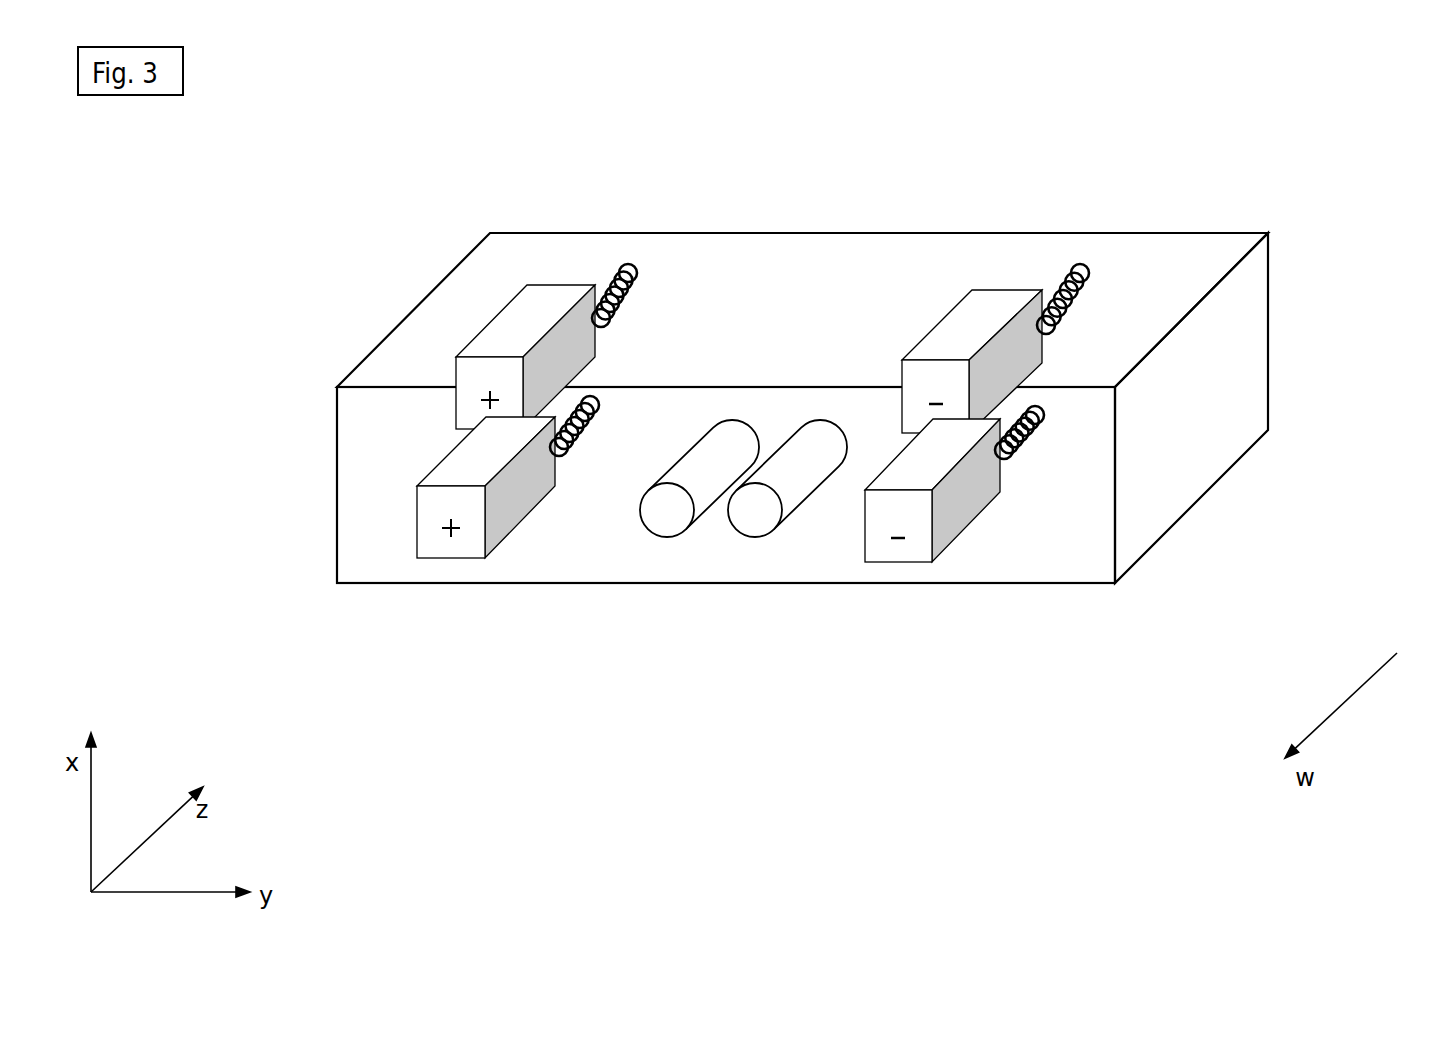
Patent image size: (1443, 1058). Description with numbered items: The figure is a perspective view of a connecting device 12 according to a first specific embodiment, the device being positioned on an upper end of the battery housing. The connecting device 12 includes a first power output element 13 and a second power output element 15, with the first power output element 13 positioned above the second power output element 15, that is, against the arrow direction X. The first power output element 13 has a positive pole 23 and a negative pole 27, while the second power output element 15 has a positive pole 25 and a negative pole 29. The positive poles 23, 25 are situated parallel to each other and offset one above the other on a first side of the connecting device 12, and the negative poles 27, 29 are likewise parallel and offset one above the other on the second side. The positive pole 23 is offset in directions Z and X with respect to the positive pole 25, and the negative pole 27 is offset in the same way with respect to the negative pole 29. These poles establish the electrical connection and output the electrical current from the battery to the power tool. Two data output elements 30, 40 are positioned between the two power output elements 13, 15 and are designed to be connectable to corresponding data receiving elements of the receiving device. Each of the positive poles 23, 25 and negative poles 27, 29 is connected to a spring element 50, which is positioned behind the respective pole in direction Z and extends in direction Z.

The connecting device 12 is at (1350, 197).
The first power output element 13 is at (1300, 310).
The second power output element 15 is at (306, 447).
The positive pole 23 is at (497, 328).
The positive pole 25 is at (506, 509).
The negative pole 27 is at (982, 310).
The negative pole 29 is at (965, 502).
The data output element 30 is at (669, 518).
The data output element 40 is at (755, 515).
The spring element 50 is at (588, 407).